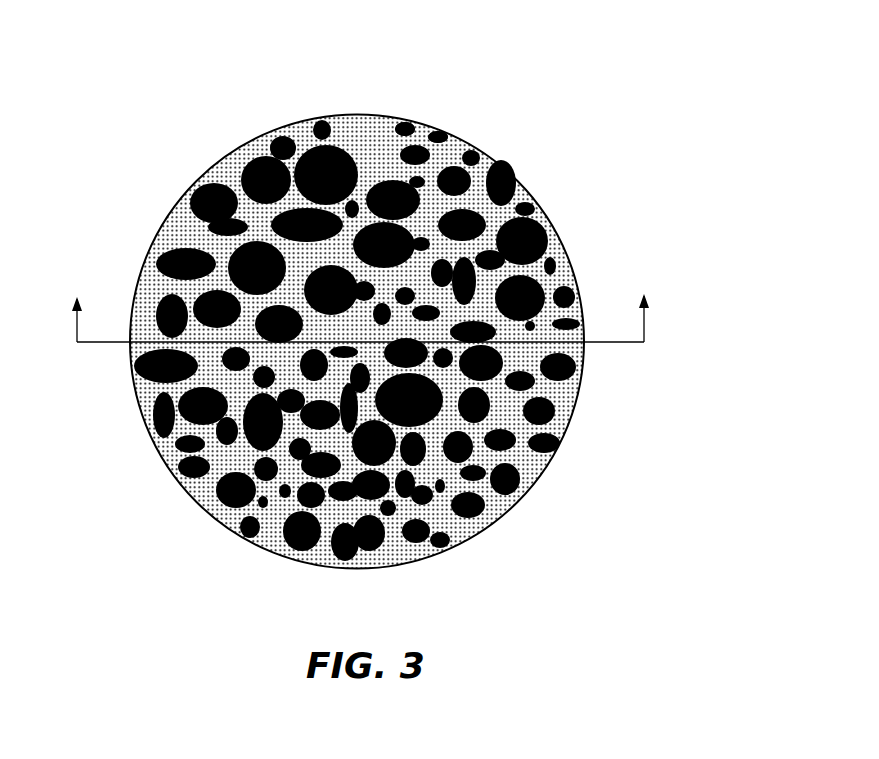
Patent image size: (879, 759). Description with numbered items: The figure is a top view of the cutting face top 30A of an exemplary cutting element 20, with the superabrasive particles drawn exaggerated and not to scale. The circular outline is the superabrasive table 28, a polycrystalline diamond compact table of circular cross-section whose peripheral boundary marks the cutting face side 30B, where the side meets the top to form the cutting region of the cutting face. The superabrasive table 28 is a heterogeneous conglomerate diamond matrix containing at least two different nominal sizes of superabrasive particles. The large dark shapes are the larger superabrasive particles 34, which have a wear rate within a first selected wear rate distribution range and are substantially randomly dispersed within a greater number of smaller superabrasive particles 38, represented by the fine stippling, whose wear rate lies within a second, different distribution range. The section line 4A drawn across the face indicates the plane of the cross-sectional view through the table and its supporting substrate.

The cutting element 20 is at (471, 343).
The superabrasive table 28 is at (558, 437).
The cutting face top 30A is at (425, 508).
The cutting face side 30B is at (453, 128).
The larger superabrasive particles 34 is at (558, 237).
The smaller superabrasive particles 38 is at (507, 187).
The section line 4A is at (361, 306).